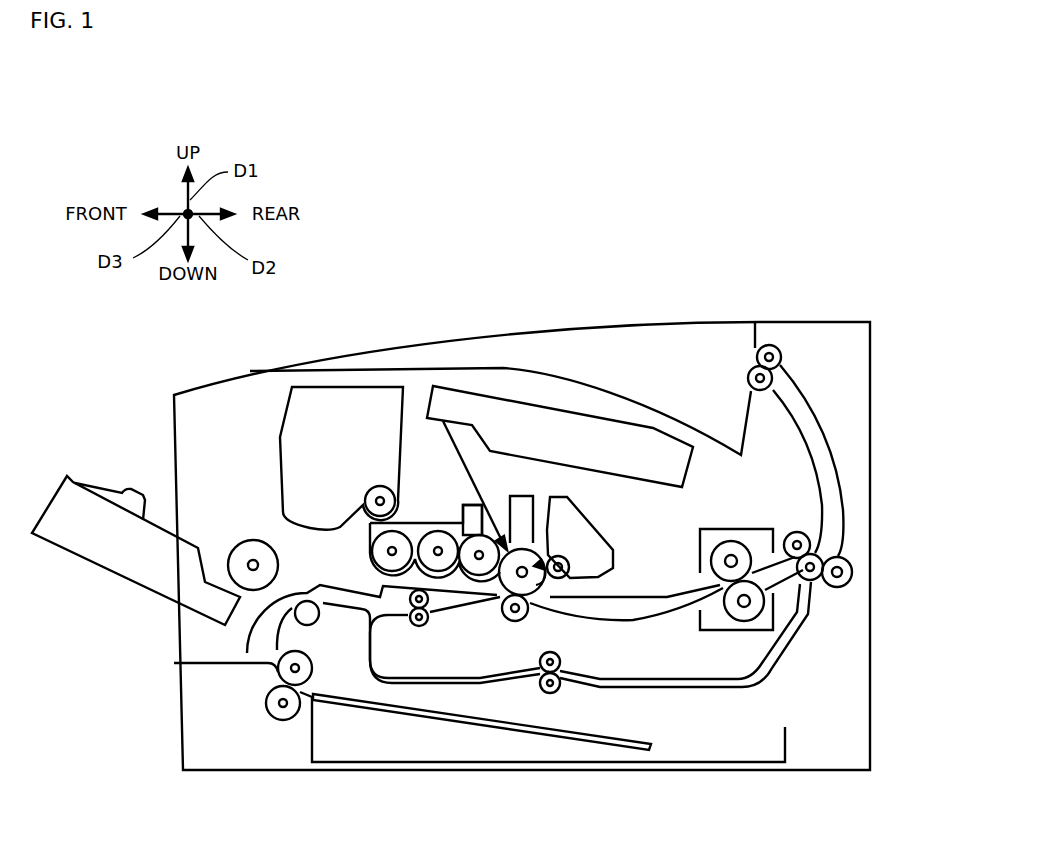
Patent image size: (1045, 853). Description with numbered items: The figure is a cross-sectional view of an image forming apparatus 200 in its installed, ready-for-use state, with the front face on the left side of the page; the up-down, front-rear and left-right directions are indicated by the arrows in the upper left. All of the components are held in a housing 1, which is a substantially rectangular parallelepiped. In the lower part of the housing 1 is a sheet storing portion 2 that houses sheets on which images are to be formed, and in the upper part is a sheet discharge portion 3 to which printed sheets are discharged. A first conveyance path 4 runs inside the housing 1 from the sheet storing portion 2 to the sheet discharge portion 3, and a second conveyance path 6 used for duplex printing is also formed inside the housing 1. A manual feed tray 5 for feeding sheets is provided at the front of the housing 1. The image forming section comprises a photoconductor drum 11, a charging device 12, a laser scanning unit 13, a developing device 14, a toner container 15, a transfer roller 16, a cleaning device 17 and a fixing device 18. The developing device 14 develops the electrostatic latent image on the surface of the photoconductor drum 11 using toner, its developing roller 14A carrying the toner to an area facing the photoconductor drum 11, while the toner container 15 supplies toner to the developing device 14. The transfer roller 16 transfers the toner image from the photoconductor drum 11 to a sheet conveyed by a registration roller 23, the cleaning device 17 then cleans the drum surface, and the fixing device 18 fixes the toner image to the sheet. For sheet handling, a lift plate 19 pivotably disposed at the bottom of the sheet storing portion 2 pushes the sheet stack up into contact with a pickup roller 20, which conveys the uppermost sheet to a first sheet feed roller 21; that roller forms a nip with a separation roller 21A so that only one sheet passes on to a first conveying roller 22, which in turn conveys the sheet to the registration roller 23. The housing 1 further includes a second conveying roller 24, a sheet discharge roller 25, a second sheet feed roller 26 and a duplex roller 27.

The image forming apparatus 200 is at (878, 255).
The housing 1 is at (815, 322).
The sheet storing portion 2 is at (785, 741).
The sheet discharge portion 3 is at (632, 392).
The first conveyance path 4 is at (617, 610).
The manual feed tray 5 is at (108, 478).
The second conveyance path 6 is at (788, 655).
The photoconductor drum 11 is at (537, 600).
The charging device 12 is at (521, 496).
The laser scanning unit 13 is at (688, 471).
The developing device 14 is at (413, 522).
The developing roller 14A is at (472, 530).
The toner container 15 is at (280, 437).
The transfer roller 16 is at (515, 621).
The cleaning device 17 is at (585, 520).
The fixing device 18 is at (697, 622).
The lift plate 19 is at (526, 730).
The pickup roller 20 is at (370, 660).
The first sheet feed roller 21 is at (312, 660).
The separation roller 21A is at (268, 705).
The first conveying roller 22 is at (307, 600).
The registration roller 23 is at (428, 624).
The second conveying roller 24 is at (792, 530).
The sheet discharge roller 25 is at (748, 368).
The second sheet feed roller 26 is at (249, 540).
The duplex roller 27 is at (560, 688).